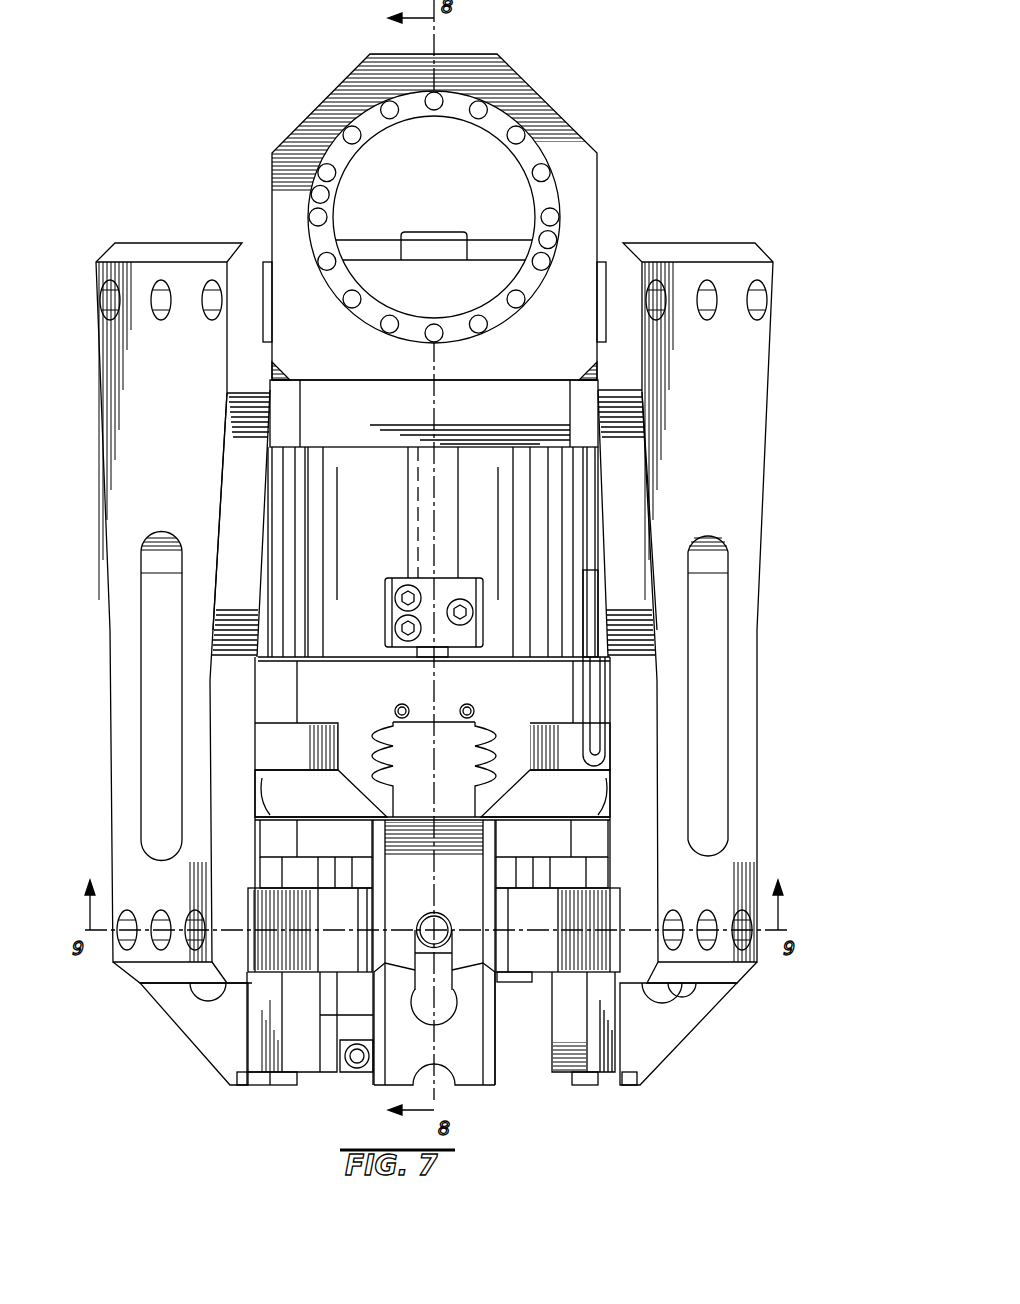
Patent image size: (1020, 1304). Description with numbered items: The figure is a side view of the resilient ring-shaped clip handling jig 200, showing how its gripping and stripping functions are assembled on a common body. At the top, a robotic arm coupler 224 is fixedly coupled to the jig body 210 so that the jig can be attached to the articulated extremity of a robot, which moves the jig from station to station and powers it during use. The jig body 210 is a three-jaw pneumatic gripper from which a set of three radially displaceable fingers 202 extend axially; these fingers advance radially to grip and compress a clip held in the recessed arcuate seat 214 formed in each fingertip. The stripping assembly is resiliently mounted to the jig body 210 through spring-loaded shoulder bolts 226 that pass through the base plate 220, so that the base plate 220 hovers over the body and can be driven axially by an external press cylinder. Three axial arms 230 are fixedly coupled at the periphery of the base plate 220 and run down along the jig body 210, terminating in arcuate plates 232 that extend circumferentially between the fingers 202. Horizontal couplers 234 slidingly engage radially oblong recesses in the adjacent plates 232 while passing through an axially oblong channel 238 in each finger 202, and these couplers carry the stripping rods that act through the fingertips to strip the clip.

The jig 200 is at (690, 186).
The robotic arm coupler 224 is at (498, 80).
The base plate 220 is at (370, 240).
The spring-loaded shoulder bolts 226 is at (448, 232).
The axial arms 230 is at (720, 375).
The jig body 210 is at (535, 687).
The arcuate plates 232 is at (594, 910).
The axially oblong channel 238 is at (673, 993).
The fingers 202 is at (205, 1015).
The recessed arcuate seat 214 is at (297, 1075).
The horizontal couplers 234 is at (438, 955).